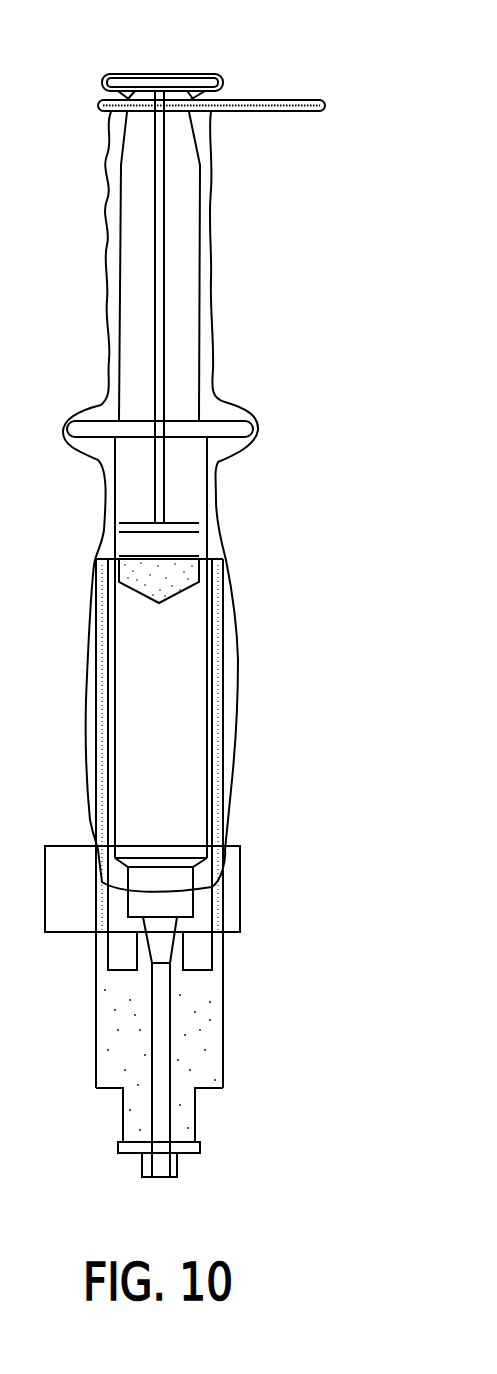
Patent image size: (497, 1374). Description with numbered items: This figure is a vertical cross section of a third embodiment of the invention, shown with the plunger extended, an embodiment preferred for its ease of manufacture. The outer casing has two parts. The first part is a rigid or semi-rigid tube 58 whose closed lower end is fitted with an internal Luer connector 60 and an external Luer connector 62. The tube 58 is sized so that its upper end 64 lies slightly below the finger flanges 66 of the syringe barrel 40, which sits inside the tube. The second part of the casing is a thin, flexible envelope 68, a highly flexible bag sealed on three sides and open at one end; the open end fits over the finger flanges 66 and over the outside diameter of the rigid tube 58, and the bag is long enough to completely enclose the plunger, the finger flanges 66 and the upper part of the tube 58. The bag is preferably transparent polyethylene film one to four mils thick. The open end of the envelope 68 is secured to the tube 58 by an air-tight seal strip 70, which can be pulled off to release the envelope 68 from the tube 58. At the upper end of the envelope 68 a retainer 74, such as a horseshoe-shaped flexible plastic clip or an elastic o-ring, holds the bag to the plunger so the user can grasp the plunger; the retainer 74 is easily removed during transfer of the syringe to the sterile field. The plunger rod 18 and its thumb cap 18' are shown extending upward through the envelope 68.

The plunger thumb cap 18' is at (162, 46).
The retainer 74 is at (325, 107).
The plunger rod 18 is at (195, 311).
The flexible envelope 68 is at (205, 240).
The finger flanges 66 is at (233, 428).
The upper end of the tube 64 is at (217, 548).
The syringe barrel 40 is at (190, 620).
The rigid tube 58 is at (217, 712).
The seal strip 70 is at (230, 887).
The internal Luer connector 60 is at (177, 953).
The external Luer connector 62 is at (198, 1125).